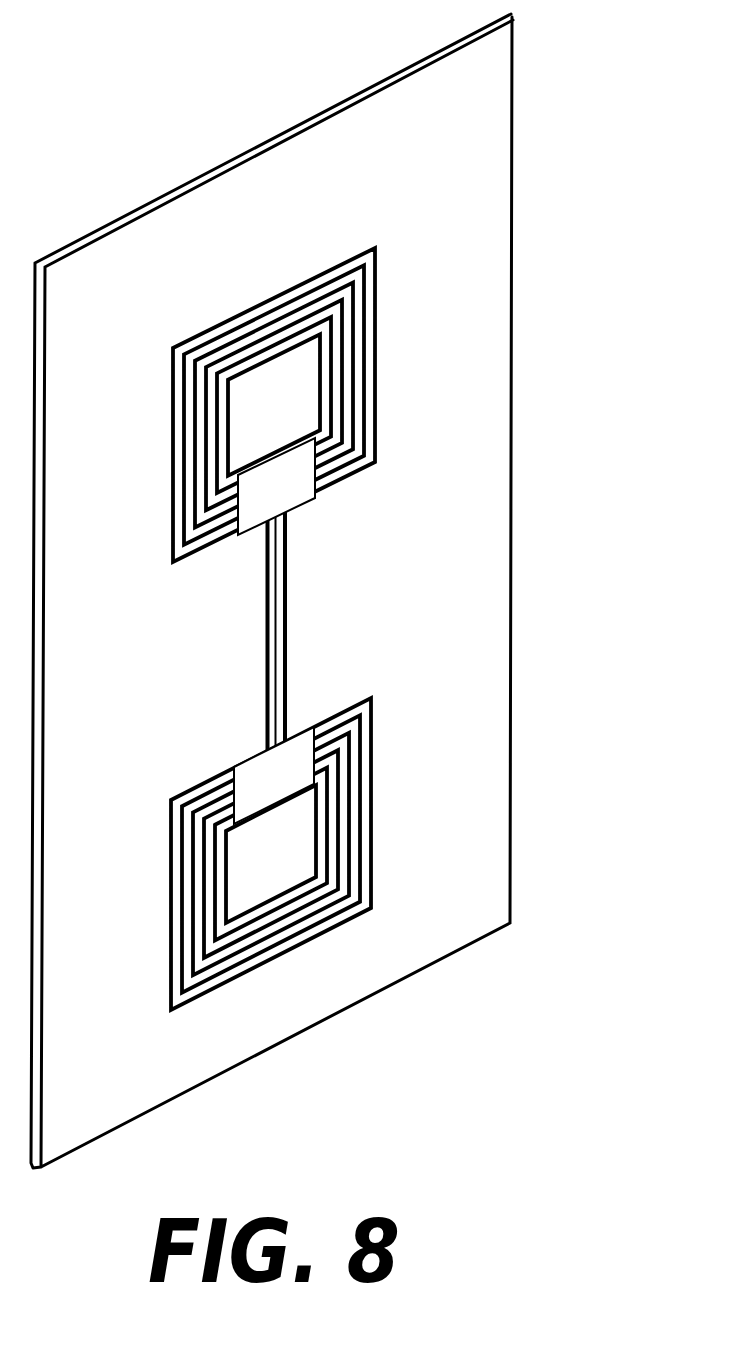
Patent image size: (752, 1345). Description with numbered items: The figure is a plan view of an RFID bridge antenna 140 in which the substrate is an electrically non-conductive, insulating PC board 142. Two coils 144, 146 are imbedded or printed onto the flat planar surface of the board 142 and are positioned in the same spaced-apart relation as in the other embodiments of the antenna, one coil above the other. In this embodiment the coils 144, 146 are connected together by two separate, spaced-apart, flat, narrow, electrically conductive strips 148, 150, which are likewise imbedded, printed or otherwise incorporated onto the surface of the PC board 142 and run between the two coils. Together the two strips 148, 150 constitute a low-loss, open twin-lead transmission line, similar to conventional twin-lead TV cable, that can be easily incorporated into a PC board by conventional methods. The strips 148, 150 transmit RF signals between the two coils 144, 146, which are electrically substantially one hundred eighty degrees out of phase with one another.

The RFID bridge antenna 140 is at (332, 591).
The PC board 142 is at (493, 172).
The coil 144 is at (172, 437).
The coil 146 is at (170, 920).
The electrically conductive strip 148 is at (265, 630).
The electrically conductive strip 150 is at (287, 622).